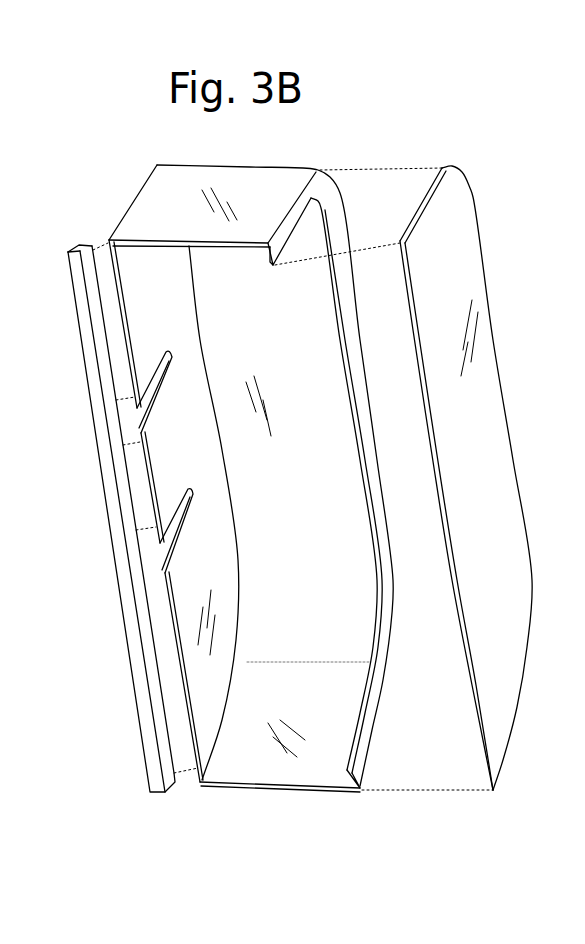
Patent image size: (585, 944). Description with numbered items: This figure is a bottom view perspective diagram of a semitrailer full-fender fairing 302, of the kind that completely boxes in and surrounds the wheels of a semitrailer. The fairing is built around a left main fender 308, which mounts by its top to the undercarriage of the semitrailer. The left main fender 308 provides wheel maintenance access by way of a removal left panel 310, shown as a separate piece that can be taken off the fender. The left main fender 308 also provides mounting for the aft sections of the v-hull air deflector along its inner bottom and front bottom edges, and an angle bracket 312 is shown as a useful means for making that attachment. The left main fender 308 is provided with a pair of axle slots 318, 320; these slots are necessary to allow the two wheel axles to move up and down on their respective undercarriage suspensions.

The full-fender fairing 302 is at (345, 818).
The left main fender 308 is at (282, 340).
The removal left panel 310 is at (502, 380).
The angle bracket 312 is at (82, 313).
The axle slot 318 is at (168, 378).
The axle slot 320 is at (180, 503).